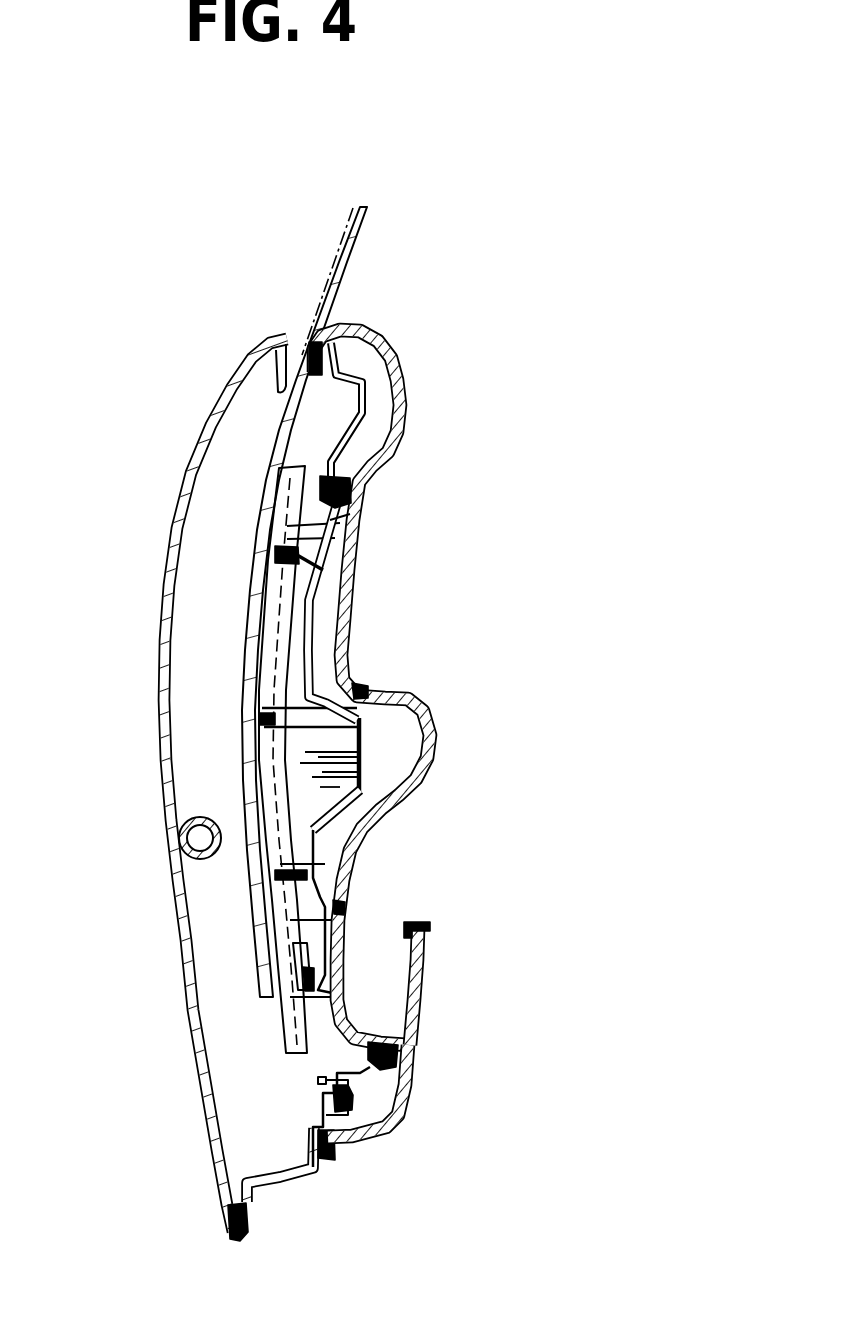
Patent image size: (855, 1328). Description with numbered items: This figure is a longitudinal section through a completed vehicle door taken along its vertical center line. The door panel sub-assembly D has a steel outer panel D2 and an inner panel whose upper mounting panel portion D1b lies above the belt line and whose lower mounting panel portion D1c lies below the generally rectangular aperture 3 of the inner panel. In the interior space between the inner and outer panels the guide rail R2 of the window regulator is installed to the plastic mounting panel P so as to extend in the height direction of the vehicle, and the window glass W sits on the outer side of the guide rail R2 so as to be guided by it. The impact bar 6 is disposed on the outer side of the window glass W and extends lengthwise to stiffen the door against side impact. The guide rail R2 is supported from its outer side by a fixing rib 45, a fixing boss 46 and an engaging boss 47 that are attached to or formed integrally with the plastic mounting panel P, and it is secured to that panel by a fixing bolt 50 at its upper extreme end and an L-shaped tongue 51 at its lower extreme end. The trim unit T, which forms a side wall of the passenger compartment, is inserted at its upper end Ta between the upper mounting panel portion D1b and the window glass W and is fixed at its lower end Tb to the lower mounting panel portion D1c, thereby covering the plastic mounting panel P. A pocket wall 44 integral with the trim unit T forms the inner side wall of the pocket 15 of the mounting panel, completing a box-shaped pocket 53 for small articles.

The door panel sub-assembly D is at (278, 761).
The outer panel D2 is at (213, 417).
The upper mounting panel portion D1b is at (365, 390).
The lower mounting panel portion D1c is at (313, 1175).
The trim unit T is at (408, 713).
The upper end of the trim unit Ta is at (357, 333).
The lower end of the trim unit Tb is at (333, 1147).
The window glass W is at (233, 740).
The guide rail R2 is at (273, 896).
The plastic mounting panel P is at (323, 632).
The fixing boss 46 is at (352, 523).
The fixing rib 45 is at (297, 638).
The fixing bolt 50 is at (280, 555).
The impact bar 6 is at (167, 863).
The engaging boss 47 is at (340, 958).
The L-shaped tongue 51 is at (295, 957).
The aperture 3 is at (310, 1073).
The box-shaped pocket 53 is at (519, 978).
The pocket wall 44 is at (410, 924).
The pocket 15 is at (357, 1028).